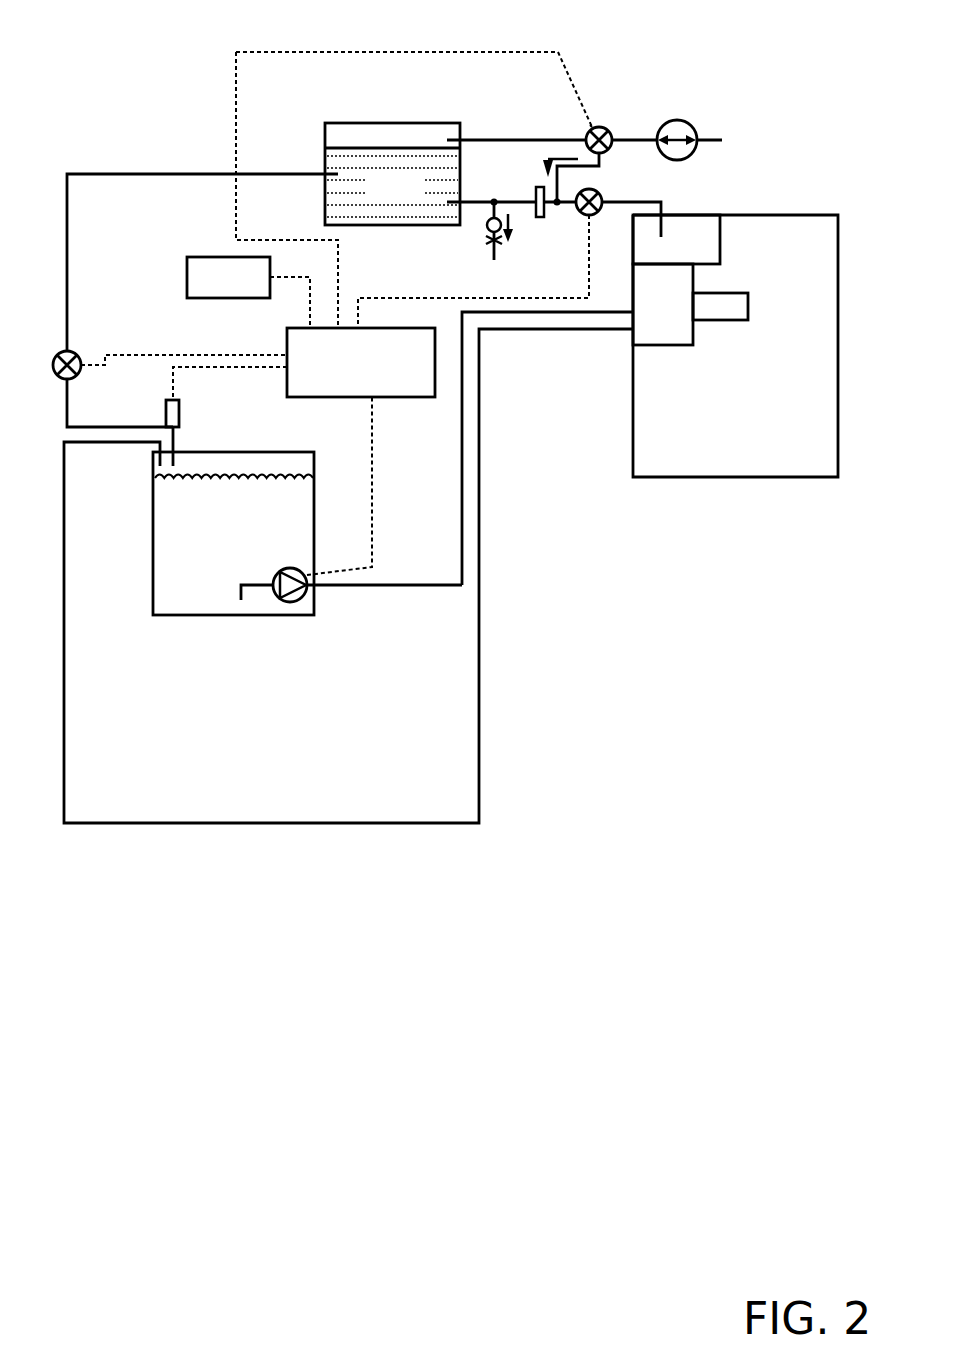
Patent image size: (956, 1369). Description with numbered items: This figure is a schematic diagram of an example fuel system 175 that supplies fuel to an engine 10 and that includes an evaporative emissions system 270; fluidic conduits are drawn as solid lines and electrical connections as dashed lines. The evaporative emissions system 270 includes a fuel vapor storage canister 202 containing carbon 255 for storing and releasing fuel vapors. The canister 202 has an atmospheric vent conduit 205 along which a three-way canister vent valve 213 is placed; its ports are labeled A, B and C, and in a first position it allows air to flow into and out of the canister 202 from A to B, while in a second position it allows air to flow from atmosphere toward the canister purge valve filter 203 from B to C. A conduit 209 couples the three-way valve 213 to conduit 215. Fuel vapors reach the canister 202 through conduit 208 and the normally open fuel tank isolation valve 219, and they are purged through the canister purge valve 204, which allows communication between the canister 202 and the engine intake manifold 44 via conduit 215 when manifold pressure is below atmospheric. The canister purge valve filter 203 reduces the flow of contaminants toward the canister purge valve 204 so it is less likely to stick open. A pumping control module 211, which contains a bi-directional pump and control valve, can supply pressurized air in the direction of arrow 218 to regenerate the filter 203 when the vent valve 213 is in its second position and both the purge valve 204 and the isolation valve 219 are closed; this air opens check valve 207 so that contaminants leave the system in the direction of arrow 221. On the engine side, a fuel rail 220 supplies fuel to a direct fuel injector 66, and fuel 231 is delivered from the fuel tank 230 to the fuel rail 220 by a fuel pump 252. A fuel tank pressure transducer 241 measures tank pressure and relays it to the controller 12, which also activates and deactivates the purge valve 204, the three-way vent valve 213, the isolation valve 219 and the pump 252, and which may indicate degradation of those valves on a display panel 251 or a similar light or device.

The fuel system 175 is at (100, 36).
The evaporative emissions system 270 is at (574, 42).
The fuel vapor storage canister 202 is at (325, 123).
The carbon 255 is at (392, 186).
The atmospheric vent conduit 205 is at (477, 138).
The three-way canister vent valve 213 is at (605, 128).
The pumping control module 211 is at (690, 128).
The arrow 218 is at (548, 158).
The conduit 209 is at (603, 163).
The canister purge valve filter 203 is at (537, 218).
The canister purge valve 204 is at (600, 214).
The conduit 215 is at (665, 208).
The check valve 207 is at (488, 242).
The arrow 221 is at (512, 238).
The engine 10 is at (838, 290).
The intake manifold 44 is at (676, 239).
The fuel rail 220 is at (663, 304).
The direct fuel injector 66 is at (720, 306).
The conduit 208 is at (68, 232).
The fuel tank isolation valve 219 is at (80, 352).
The display panel 251 is at (248, 292).
The controller 12 is at (361, 362).
The fuel tank pressure transducer 241 is at (166, 415).
The fuel tank 230 is at (180, 452).
The fuel 231 is at (222, 526).
The fuel pump 252 is at (278, 572).